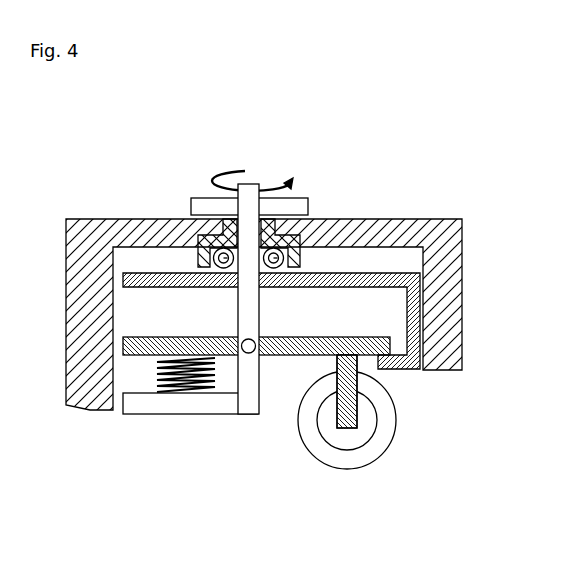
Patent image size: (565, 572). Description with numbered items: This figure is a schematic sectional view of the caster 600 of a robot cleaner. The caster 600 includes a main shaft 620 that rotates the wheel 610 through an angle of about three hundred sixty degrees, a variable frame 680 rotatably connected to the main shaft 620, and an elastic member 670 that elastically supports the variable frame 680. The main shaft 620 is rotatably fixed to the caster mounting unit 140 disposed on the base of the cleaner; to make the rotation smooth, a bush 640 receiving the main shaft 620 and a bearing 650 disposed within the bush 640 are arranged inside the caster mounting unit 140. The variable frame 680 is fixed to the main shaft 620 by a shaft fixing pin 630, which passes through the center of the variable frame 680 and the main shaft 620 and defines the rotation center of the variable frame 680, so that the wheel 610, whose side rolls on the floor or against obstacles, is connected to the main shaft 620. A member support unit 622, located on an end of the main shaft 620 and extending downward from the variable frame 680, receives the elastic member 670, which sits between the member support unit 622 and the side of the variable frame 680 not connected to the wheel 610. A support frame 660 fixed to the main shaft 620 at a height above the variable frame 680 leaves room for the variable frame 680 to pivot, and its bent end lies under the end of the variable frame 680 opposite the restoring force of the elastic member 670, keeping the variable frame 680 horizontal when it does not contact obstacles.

The caster mounting unit 140 is at (450, 218).
The caster 600 is at (380, 263).
The wheel 610 is at (361, 455).
The main shaft 620 is at (245, 207).
The member support unit 622 is at (201, 405).
The shaft fixing pin 630 is at (248, 354).
The bush 640 is at (284, 261).
The bearing 650 is at (197, 262).
The support frame 660 is at (398, 271).
The elastic member 670 is at (163, 372).
The variable frame 680 is at (388, 346).